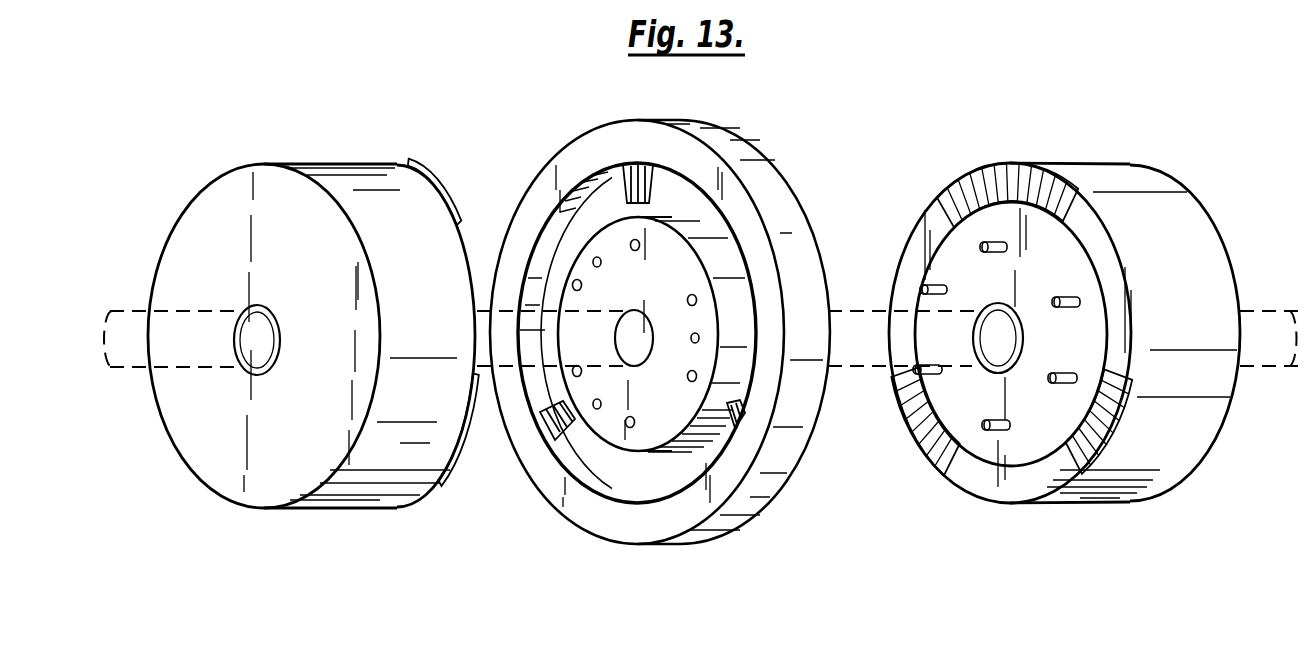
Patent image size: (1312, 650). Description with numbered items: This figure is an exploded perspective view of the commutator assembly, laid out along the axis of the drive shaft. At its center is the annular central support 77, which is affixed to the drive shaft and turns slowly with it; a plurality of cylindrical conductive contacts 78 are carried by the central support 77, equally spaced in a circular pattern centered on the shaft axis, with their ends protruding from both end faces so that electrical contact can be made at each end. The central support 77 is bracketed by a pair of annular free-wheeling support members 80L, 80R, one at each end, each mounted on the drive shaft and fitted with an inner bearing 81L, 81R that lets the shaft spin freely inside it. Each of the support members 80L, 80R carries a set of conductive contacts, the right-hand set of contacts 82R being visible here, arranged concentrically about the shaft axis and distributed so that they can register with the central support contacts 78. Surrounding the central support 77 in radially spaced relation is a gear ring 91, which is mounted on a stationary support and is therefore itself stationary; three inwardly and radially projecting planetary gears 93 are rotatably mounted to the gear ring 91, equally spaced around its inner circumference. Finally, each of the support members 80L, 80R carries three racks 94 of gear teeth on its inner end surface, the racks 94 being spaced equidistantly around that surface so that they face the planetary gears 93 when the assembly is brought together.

The central support 77 is at (640, 297).
The conductive contacts 78 is at (639, 252).
The free-wheeling support member 80L is at (366, 482).
The free-wheeling support member 80R is at (1207, 420).
The inner bearing 81L is at (275, 319).
The inner bearing 81R is at (1024, 340).
The conductive contacts 82R is at (1066, 296).
The gear ring 91 is at (780, 207).
The planetary gears 93 is at (657, 178).
The racks of gear teeth 94 is at (445, 205).